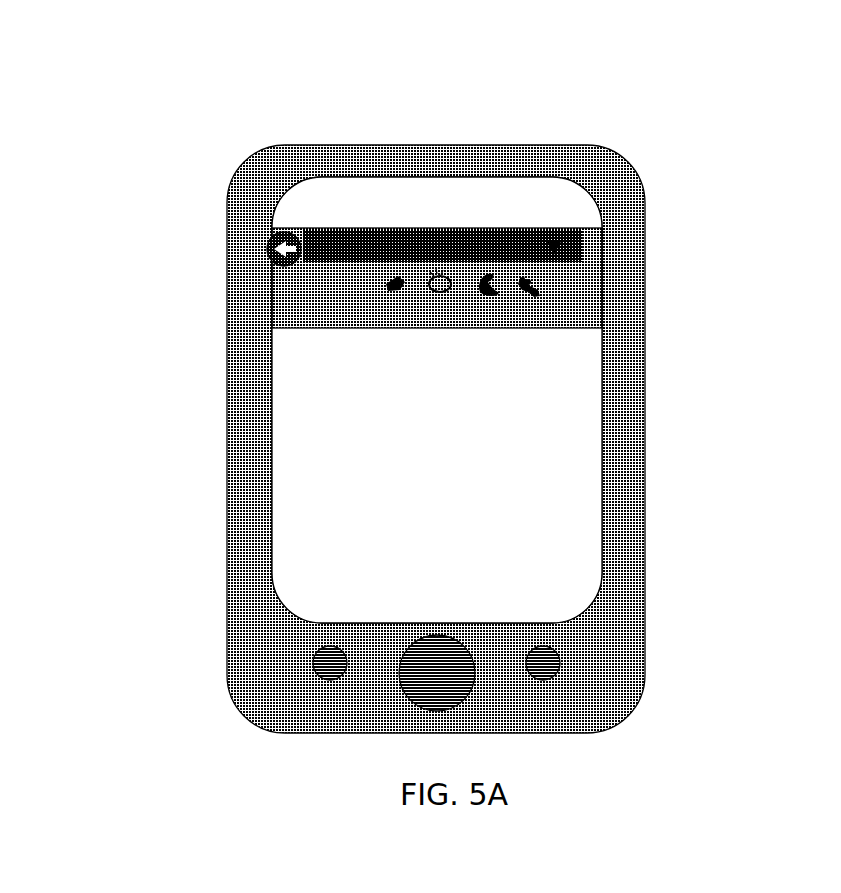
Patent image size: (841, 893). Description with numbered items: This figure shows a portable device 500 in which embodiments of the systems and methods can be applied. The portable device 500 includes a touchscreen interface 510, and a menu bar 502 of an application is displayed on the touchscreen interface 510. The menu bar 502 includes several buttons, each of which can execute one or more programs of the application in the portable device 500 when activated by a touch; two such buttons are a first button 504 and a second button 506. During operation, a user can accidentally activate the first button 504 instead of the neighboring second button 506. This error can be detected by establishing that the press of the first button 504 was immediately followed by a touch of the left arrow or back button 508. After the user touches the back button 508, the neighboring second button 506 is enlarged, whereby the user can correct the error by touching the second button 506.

The portable device 500 is at (817, 81).
The menu bar 502 is at (580, 282).
The first button 504 is at (495, 260).
The second button 506 is at (532, 272).
The back button 508 is at (277, 250).
The touchscreen interface 510 is at (577, 395).